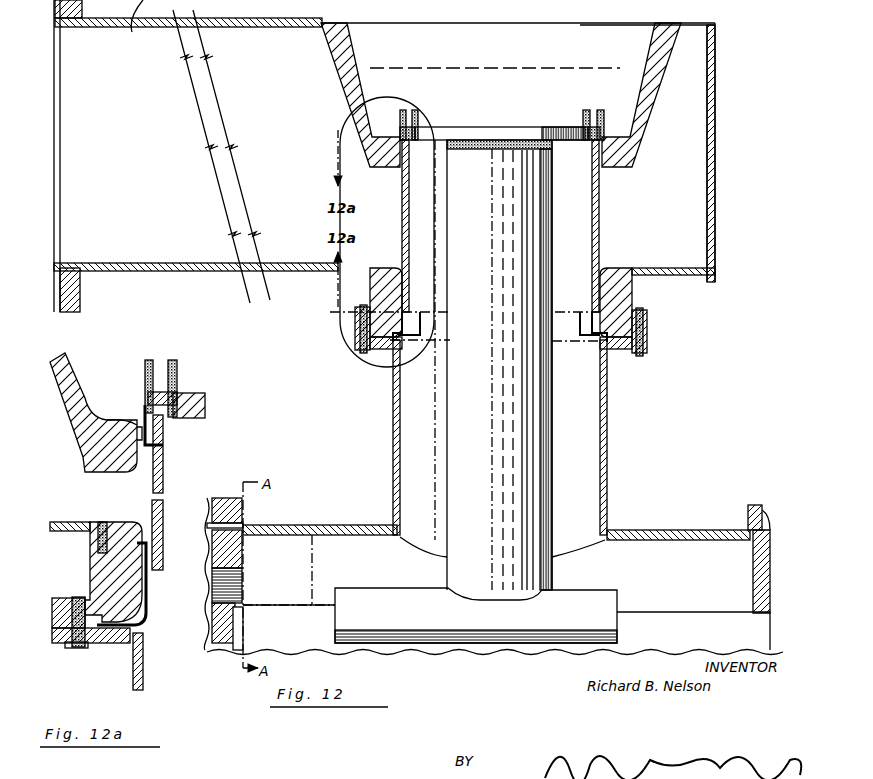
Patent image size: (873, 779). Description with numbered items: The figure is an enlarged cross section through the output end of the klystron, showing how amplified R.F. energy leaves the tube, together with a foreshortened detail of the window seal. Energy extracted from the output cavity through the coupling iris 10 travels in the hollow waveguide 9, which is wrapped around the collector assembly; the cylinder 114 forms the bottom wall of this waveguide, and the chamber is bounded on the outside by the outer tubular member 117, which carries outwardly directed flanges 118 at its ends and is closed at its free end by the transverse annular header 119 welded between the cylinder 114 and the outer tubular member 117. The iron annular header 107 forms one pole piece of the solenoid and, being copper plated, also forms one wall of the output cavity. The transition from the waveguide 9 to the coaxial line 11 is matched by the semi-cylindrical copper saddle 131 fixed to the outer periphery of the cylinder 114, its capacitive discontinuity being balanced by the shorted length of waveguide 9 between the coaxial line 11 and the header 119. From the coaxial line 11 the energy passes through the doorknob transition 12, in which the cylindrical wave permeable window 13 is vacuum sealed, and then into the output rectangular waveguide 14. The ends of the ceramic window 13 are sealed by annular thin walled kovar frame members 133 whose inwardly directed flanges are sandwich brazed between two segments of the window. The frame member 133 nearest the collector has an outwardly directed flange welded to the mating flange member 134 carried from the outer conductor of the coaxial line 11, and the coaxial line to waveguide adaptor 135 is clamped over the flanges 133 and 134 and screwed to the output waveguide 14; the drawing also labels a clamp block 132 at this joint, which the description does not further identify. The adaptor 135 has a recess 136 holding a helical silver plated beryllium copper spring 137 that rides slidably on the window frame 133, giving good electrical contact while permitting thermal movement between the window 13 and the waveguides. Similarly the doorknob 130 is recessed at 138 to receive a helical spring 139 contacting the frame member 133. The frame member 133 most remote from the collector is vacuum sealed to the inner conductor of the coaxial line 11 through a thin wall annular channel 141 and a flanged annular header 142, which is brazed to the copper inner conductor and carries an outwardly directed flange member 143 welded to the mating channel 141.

In FIG. 12, the hollow waveguide 9 is at (278, 548).
In FIG. 12, the coupling iris 10 is at (228, 590).
In FIG. 12, the coaxial line 11 is at (628, 432).
In FIG. 12, the doorknob transition 12 is at (675, 165).
In FIG. 12, the cylindrical wave permeable window 13 is at (402, 200).
In FIG. 12A, the cylindrical wave permeable window 13 is at (163, 475).
In FIG. 12A, the output rectangular waveguide 14 is at (62, 532).
In FIG. 12, the annular header 107 is at (228, 498).
In FIG. 12, the cylinder 114 is at (665, 612).
In FIG. 12, the outer tubular member 117 is at (685, 530).
In FIG. 12, the outwardly directed flange 118 is at (750, 508).
In FIG. 12, the transverse annular header 119 is at (763, 512).
In FIG. 12, the doorknob 130 is at (340, 77).
In FIG. 12A, the doorknob 130 is at (70, 405).
In FIG. 12, the saddle 131 is at (598, 598).
In FIG. 12, the clamp block 132 is at (380, 265).
In FIG. 12A, the clamp block 132 is at (98, 520).
In FIG. 12, the annular thin walled frame member 133 is at (602, 133).
In FIG. 12A, the annular thin walled frame member 133 is at (148, 400).
In FIG. 12, the mating flange member 134 is at (623, 352).
In FIG. 12A, the mating flange member 134 is at (125, 648).
In FIG. 12, the coaxial line to waveguide adaptor 135 is at (346, 311).
In FIG. 12A, the coaxial line to waveguide adaptor 135 is at (45, 620).
In FIG. 12A, the recess 136 is at (142, 533).
In FIG. 12A, the helical wound silver plated beryllium copper spring 137 is at (105, 570).
In FIG. 12A, the recess 138 is at (113, 470).
In FIG. 12A, the helical silver plated beryllium copper spring 139 is at (140, 425).
In FIG. 12A, the thin wall annular channel 141 is at (150, 373).
In FIG. 12, the flanged annular header 142 is at (480, 128).
In FIG. 12A, the flanged annular header 142 is at (206, 400).
In FIG. 12A, the outwardly directed flange member 143 is at (178, 372).